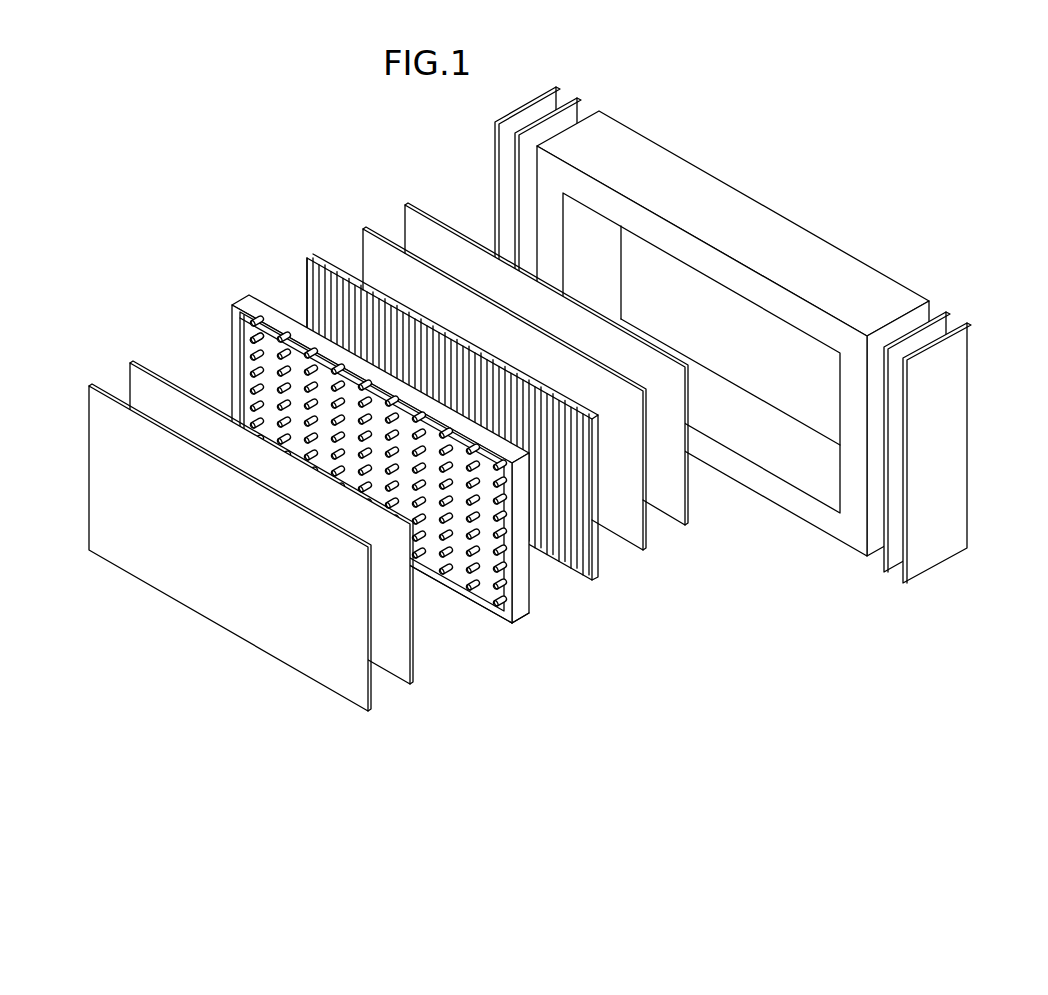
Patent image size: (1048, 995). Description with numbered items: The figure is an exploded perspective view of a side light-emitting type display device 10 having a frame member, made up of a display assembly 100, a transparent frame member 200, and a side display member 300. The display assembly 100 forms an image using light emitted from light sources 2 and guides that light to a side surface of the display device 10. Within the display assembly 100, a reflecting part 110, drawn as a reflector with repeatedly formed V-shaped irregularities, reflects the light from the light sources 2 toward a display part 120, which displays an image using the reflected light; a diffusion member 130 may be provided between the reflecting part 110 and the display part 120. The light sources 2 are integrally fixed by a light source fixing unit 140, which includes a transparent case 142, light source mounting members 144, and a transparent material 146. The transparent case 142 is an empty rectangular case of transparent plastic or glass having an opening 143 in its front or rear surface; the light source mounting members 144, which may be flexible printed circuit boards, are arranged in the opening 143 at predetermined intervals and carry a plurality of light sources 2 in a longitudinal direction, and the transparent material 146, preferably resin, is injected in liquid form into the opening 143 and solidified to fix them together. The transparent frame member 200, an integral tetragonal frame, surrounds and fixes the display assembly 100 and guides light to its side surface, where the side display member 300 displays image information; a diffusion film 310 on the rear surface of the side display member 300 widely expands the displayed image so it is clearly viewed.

The side light-emitting type display device 10 is at (336, 162).
The light sources 2 is at (247, 342).
The display assembly 100 is at (428, 485).
The reflecting part 110 is at (593, 555).
The display part 120 is at (687, 503).
The diffusion member 130 is at (644, 528).
The light source fixing unit 140 is at (417, 499).
The transparent case 142 is at (527, 572).
The light source mounting members 144 is at (530, 608).
The transparent material 146 is at (485, 597).
The transparent frame member 200 is at (733, 356).
The opening 143 is at (788, 197).
The side display member 300 is at (958, 352).
The diffusion film 310 is at (948, 317).